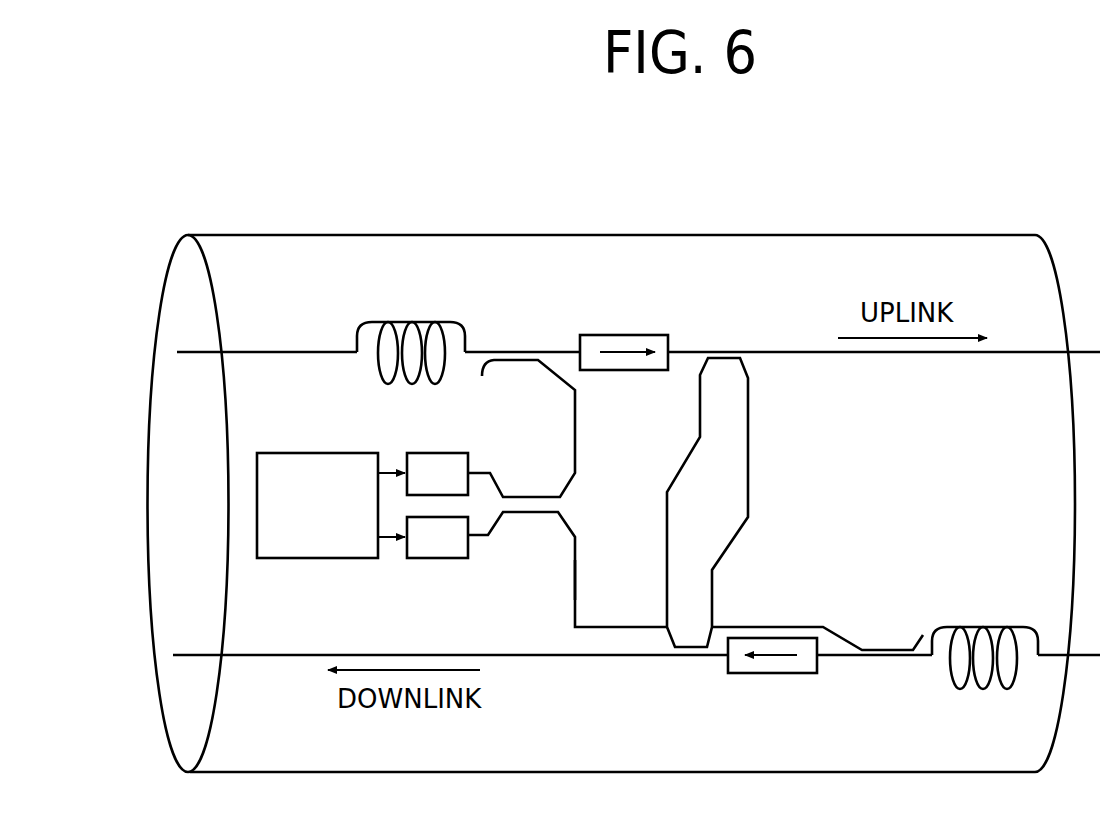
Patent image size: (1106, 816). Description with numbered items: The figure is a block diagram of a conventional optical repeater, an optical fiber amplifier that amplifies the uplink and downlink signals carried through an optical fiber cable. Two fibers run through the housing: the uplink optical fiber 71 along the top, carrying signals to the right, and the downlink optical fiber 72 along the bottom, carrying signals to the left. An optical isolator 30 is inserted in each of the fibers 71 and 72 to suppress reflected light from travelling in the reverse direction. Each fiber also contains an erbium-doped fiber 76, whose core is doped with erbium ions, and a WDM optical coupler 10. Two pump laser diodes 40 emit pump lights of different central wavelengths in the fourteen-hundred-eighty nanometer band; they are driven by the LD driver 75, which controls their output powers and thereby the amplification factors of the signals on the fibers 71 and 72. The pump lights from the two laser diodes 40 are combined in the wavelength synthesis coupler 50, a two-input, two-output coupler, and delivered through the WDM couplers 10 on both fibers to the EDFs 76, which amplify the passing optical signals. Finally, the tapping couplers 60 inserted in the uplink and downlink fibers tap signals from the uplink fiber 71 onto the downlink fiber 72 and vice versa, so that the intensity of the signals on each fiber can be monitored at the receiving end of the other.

The WDM optical coupler 10 is at (515, 352).
The optical isolator 30 is at (623, 335).
The pump laser diode 40 is at (447, 453).
The wavelength synthesis coupler 50 is at (528, 514).
The tapping coupler 60 is at (727, 356).
The uplink optical fiber 71 is at (1020, 352).
The downlink optical fiber 72 is at (198, 654).
The LD driver 75 is at (348, 453).
The erbium-doped fiber 76 is at (419, 322).